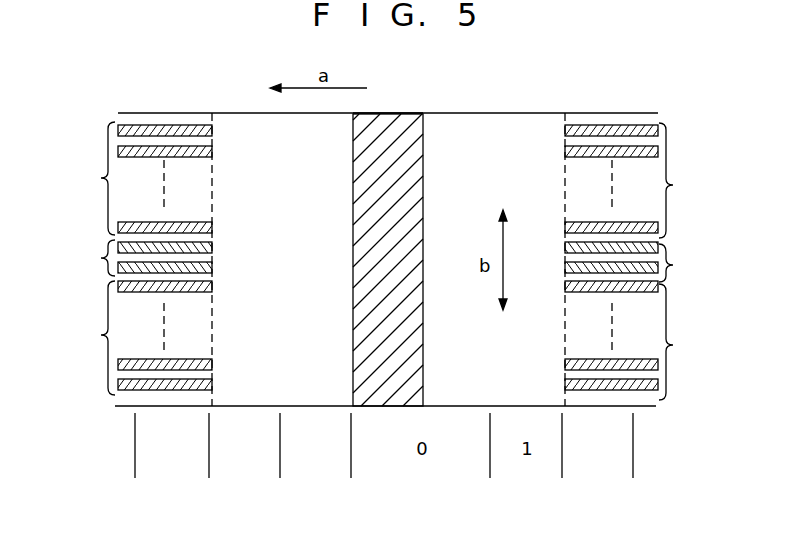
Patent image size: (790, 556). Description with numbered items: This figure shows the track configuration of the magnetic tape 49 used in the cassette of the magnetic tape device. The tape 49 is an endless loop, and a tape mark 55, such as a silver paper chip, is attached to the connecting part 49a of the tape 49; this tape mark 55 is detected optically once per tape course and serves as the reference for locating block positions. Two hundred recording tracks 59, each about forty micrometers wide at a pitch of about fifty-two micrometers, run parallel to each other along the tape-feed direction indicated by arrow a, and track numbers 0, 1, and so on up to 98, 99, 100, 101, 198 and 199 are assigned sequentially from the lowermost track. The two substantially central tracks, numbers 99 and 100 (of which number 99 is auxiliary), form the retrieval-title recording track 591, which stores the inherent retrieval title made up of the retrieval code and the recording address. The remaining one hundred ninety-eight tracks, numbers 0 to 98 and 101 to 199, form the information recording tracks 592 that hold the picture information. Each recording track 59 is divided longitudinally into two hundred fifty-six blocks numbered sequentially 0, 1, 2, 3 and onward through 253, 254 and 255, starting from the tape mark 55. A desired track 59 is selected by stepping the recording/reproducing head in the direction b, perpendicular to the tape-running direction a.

The magnetic tape 49 is at (510, 113).
The connecting part 49a is at (401, 113).
The tape mark 55 is at (353, 191).
The recording tracks 59 is at (172, 126).
The recording track for retrieval title 591 is at (387, 261).
The information recording tracks 592 is at (382, 261).
The track number 199 is at (388, 130).
The track number 198 is at (388, 151).
The track number 101 is at (388, 228).
The track number 100 is at (388, 248).
The track number 99 is at (388, 268).
The track number 98 is at (388, 288).
The track number 1 / block number 1 is at (388, 365).
The track number 0 / block number 0 is at (388, 385).
The block number 253 is at (105, 445).
The block number 254 is at (182, 445).
The block number 255 is at (289, 445).
The block number 2 is at (583, 445).
The block number 3 is at (657, 445).